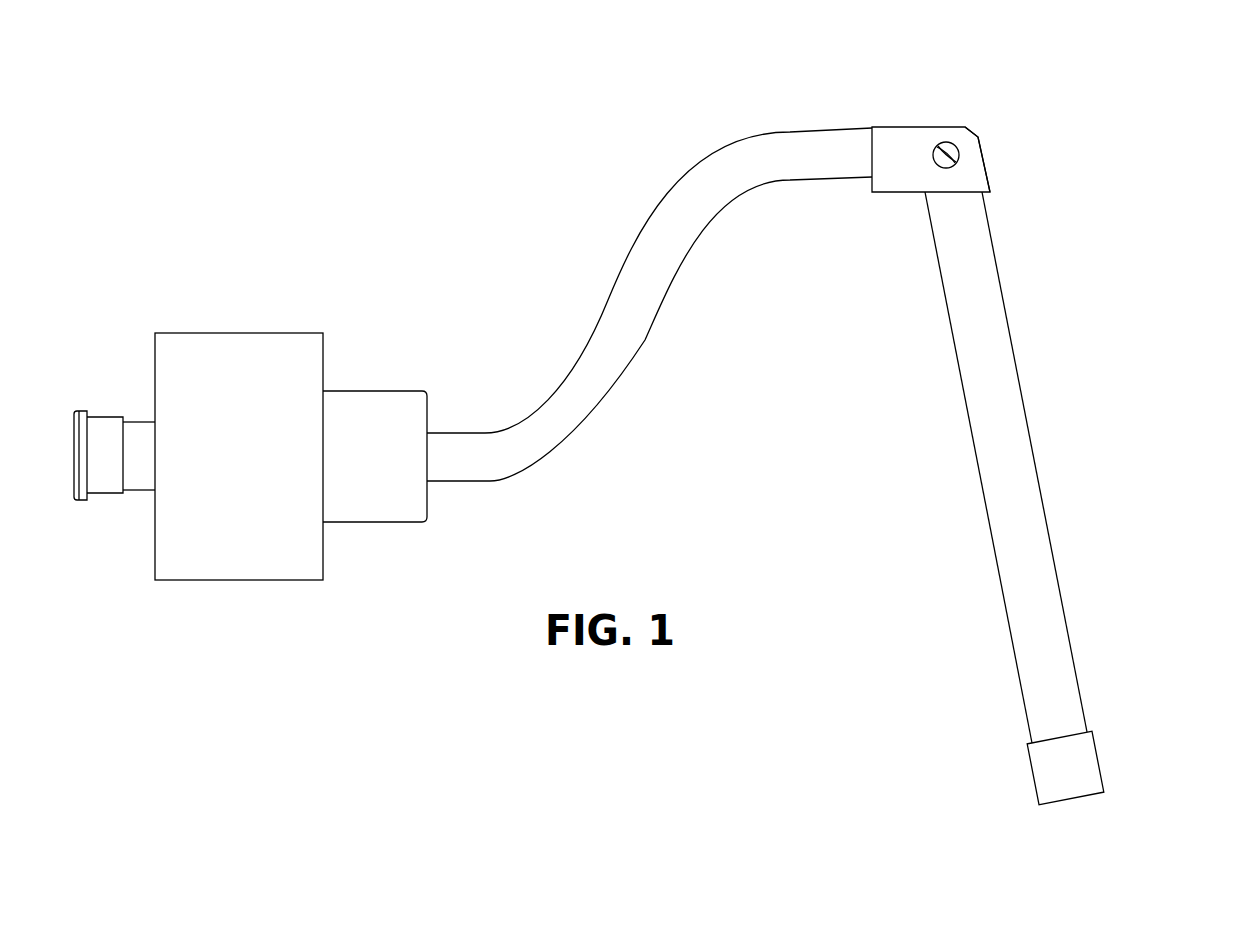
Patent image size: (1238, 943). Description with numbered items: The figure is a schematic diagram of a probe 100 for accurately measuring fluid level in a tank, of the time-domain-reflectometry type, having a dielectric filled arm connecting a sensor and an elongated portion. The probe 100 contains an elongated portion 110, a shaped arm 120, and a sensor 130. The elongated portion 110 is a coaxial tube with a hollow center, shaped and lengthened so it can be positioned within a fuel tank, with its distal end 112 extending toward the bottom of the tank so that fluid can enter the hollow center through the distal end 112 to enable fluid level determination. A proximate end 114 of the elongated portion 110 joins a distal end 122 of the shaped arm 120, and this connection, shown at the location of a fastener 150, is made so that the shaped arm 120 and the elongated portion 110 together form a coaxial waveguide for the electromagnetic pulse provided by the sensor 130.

The probe 100 is at (637, 124).
The elongated portion 110 is at (1020, 386).
The distal end 112 is at (1101, 772).
The proximate end 114 is at (985, 194).
The shaped arm 120 is at (611, 297).
The distal end 122 is at (874, 125).
The sensor 130 is at (274, 331).
The fastener screw 150 is at (974, 129).